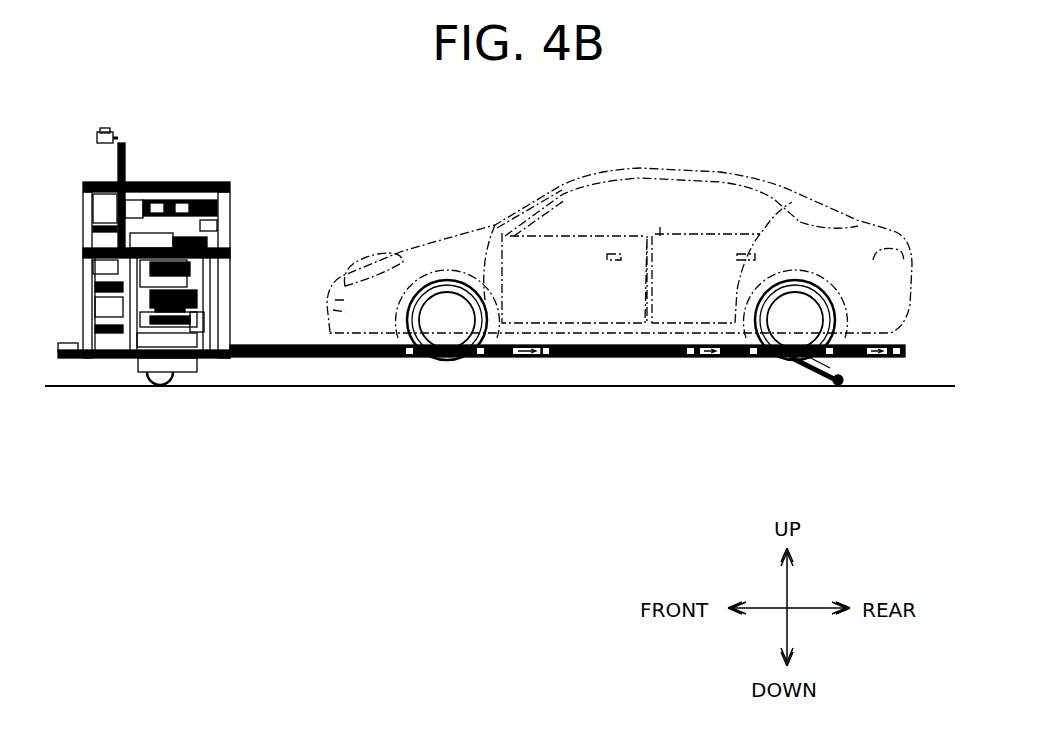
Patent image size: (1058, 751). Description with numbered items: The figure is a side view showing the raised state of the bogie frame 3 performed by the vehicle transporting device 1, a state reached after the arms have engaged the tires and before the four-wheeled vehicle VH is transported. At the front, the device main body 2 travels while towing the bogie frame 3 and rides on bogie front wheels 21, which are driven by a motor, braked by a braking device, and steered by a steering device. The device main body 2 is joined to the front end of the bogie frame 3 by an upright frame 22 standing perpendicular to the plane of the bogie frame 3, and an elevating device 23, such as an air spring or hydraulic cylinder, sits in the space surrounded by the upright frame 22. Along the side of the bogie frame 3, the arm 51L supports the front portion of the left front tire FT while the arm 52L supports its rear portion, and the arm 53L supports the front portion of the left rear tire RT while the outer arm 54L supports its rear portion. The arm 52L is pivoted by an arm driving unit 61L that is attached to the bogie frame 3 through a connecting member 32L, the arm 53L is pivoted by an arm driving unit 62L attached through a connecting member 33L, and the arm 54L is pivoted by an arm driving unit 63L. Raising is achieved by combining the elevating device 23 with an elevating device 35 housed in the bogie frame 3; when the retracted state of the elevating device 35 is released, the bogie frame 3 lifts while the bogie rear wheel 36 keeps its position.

The vehicle transporting device 1 is at (208, 160).
The device main body 2 is at (92, 182).
The bogie frame 3 is at (302, 345).
The bogie front wheels 21 is at (150, 378).
The upright frame 22 is at (208, 322).
The elevating device 23 is at (180, 320).
The connecting member 32L is at (560, 358).
The connecting member 33L is at (672, 358).
The elevating device 35 is at (790, 362).
The bogie rear wheel 36 is at (838, 380).
The arm 51L is at (408, 358).
The arm 52L is at (482, 358).
The arm 53L is at (753, 358).
The arm 54L is at (797, 358).
The arm driving unit 61L is at (527, 358).
The arm driving unit 62L is at (706, 358).
The arm driving unit 63L is at (886, 340).
The front tires FT is at (447, 281).
The rear tires RT is at (820, 283).
The four-wheeled vehicle VH is at (778, 187).